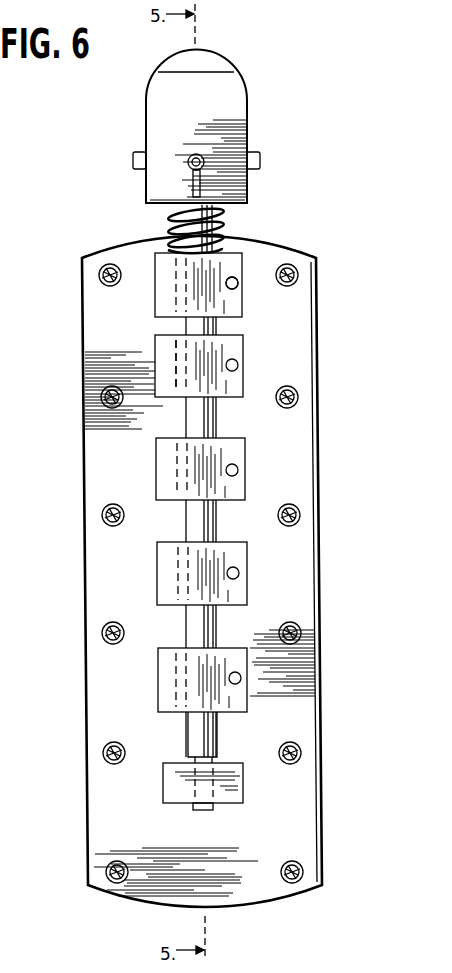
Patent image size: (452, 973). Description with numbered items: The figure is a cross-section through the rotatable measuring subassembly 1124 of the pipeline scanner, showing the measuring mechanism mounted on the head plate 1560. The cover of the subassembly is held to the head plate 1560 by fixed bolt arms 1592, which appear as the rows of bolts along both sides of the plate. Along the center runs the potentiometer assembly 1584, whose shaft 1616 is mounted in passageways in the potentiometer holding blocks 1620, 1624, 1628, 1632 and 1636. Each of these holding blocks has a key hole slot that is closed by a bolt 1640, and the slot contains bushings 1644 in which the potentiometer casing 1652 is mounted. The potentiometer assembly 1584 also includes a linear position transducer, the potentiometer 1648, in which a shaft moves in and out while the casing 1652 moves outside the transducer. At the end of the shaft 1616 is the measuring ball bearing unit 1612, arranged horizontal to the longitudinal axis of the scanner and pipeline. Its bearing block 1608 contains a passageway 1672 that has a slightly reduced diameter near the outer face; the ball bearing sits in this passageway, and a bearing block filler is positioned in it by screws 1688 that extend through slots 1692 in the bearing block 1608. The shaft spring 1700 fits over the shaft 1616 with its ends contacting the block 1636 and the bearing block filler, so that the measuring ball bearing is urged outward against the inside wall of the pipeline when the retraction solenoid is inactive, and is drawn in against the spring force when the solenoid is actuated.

The rotatable measuring subassembly 1124 is at (320, 804).
The head plate 1560 is at (142, 880).
The potentiometer assembly 1584 is at (160, 705).
The fixed bolt arms 1592 is at (103, 518).
The bearing block 1608 is at (226, 108).
The measuring ball bearing unit 1612 is at (206, 118).
The shaft 1616 is at (218, 326).
The potentiometer holding block 1620 is at (164, 682).
The potentiometer holding block 1624 is at (162, 574).
The potentiometer holding block 1628 is at (160, 472).
The potentiometer holding block 1632 is at (160, 358).
The potentiometer holding block 1636 is at (160, 290).
The bolt 1640 is at (238, 288).
The bushings 1644 is at (228, 386).
The potentiometer 1648 is at (210, 810).
The potentiometer casing 1652 is at (208, 742).
The passageway 1672 is at (202, 66).
The screws 1688 is at (204, 157).
The slots 1692 is at (200, 185).
The shaft spring 1700 is at (172, 226).